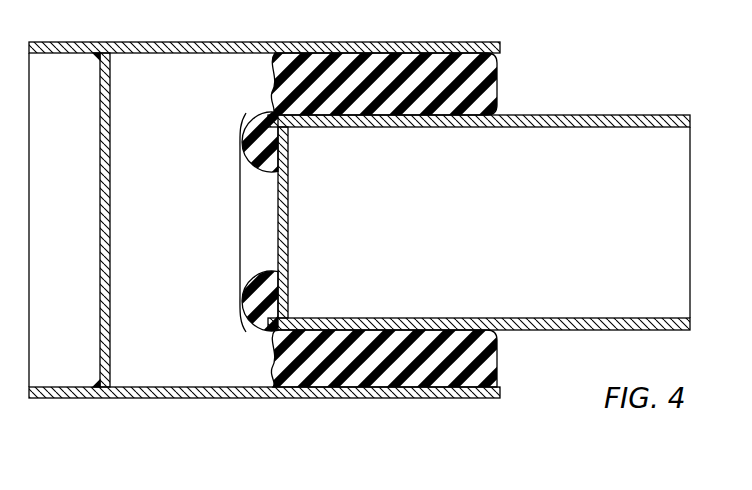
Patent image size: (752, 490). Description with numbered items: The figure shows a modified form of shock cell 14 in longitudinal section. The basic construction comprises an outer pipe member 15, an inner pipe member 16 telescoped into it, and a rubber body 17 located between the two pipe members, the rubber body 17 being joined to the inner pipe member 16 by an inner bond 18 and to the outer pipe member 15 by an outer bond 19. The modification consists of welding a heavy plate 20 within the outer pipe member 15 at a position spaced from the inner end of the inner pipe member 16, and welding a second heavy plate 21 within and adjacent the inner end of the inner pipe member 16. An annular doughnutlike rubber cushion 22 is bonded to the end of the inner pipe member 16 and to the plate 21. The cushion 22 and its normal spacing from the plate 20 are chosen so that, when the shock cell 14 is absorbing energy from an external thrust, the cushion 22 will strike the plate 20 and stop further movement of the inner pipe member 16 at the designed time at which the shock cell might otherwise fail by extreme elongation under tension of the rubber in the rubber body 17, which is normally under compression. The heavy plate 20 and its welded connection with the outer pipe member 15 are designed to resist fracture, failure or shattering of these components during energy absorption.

The shock cell 14 is at (528, 99).
The outer pipe member 15 is at (186, 50).
The inner pipe member 16 is at (637, 117).
The rubber body 17 is at (297, 84).
The inner bond 18 is at (432, 114).
The outer bond 19 is at (384, 62).
The heavy plate 20 is at (112, 226).
The heavy plate 21 is at (288, 243).
The annular doughnutlike rubber cushion 22 is at (262, 200).